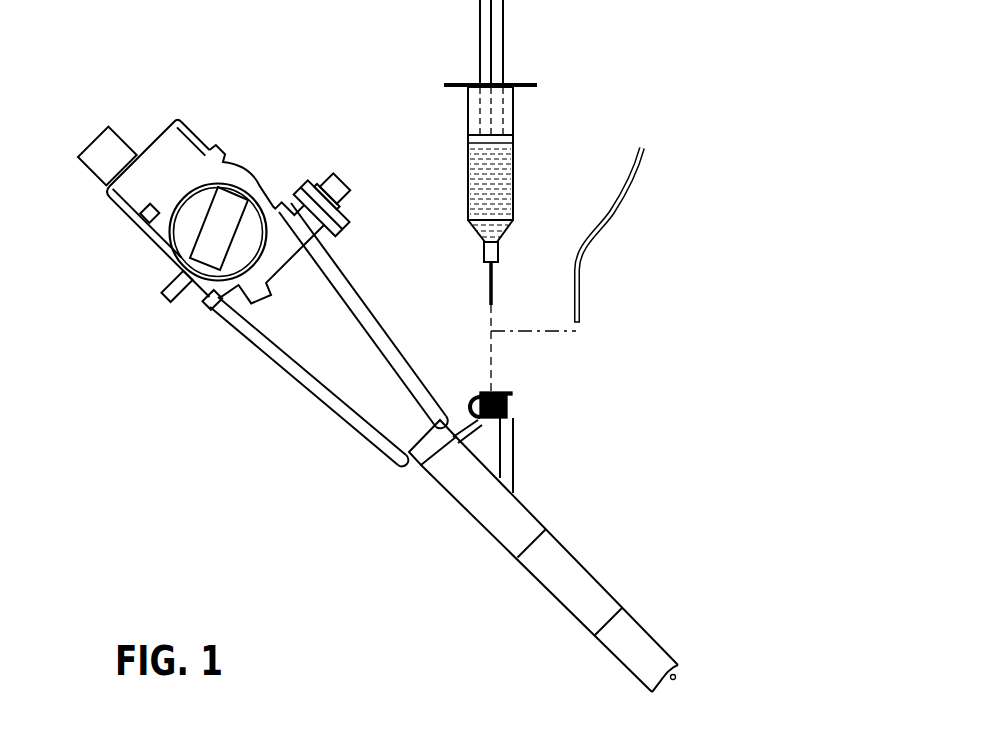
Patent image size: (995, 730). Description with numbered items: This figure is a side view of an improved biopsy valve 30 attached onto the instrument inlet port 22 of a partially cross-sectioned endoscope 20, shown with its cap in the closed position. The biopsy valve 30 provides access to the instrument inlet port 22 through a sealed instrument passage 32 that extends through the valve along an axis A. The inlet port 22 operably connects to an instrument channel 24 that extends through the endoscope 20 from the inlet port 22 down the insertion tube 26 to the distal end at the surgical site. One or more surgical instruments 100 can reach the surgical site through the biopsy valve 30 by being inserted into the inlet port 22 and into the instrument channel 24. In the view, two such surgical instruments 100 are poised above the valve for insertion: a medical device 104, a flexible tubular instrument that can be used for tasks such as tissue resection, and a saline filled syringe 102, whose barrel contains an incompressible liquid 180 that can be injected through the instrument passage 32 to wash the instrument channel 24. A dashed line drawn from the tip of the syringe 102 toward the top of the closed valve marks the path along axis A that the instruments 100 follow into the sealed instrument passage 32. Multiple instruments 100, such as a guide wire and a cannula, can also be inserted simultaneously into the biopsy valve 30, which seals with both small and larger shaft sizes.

The endoscope 20 is at (306, 345).
The instrument inlet port 22 is at (500, 424).
The instrument channel 24 is at (675, 679).
The insertion tube 26 is at (638, 646).
The biopsy valve 30 is at (520, 406).
The sealed instrument passage 32 is at (497, 382).
The axis A is at (490, 391).
The surgical instruments 100 is at (656, 322).
The saline filled syringe 102 is at (510, 110).
The medical device 104 is at (639, 178).
The incompressible liquid 180 is at (488, 160).